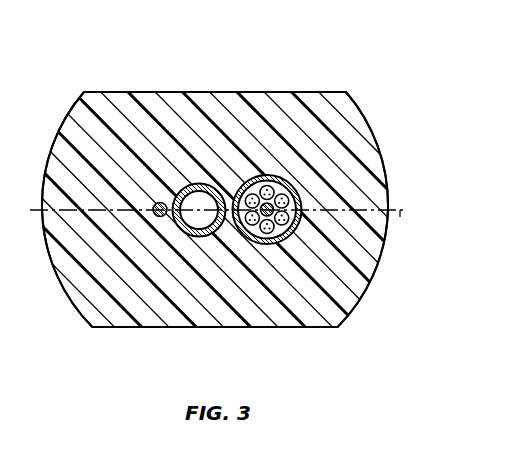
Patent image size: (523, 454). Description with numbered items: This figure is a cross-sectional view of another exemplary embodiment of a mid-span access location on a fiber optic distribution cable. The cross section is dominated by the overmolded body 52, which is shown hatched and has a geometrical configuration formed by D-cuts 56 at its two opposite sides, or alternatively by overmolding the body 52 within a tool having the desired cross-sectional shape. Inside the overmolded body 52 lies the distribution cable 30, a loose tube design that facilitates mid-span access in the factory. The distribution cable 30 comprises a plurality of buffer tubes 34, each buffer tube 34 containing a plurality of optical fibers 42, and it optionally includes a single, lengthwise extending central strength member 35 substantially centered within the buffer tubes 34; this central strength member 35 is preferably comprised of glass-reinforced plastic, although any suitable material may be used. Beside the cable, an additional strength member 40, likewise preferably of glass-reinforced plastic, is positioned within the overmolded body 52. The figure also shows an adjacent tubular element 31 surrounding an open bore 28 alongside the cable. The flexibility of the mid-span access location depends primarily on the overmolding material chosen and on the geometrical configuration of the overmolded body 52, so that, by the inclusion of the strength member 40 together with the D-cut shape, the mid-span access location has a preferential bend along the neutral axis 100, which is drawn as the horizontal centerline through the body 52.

The bore 28 is at (212, 203).
The distribution cable 30 is at (300, 204).
The tube 31 is at (200, 183).
The buffer tube 34 is at (251, 176).
The central strength member 35 is at (284, 197).
The strength member 40 is at (158, 203).
The optical fiber 42 is at (268, 214).
The overmolded body 52 is at (347, 297).
The D-cuts 56 is at (106, 86).
The neutral axis 100 is at (400, 217).